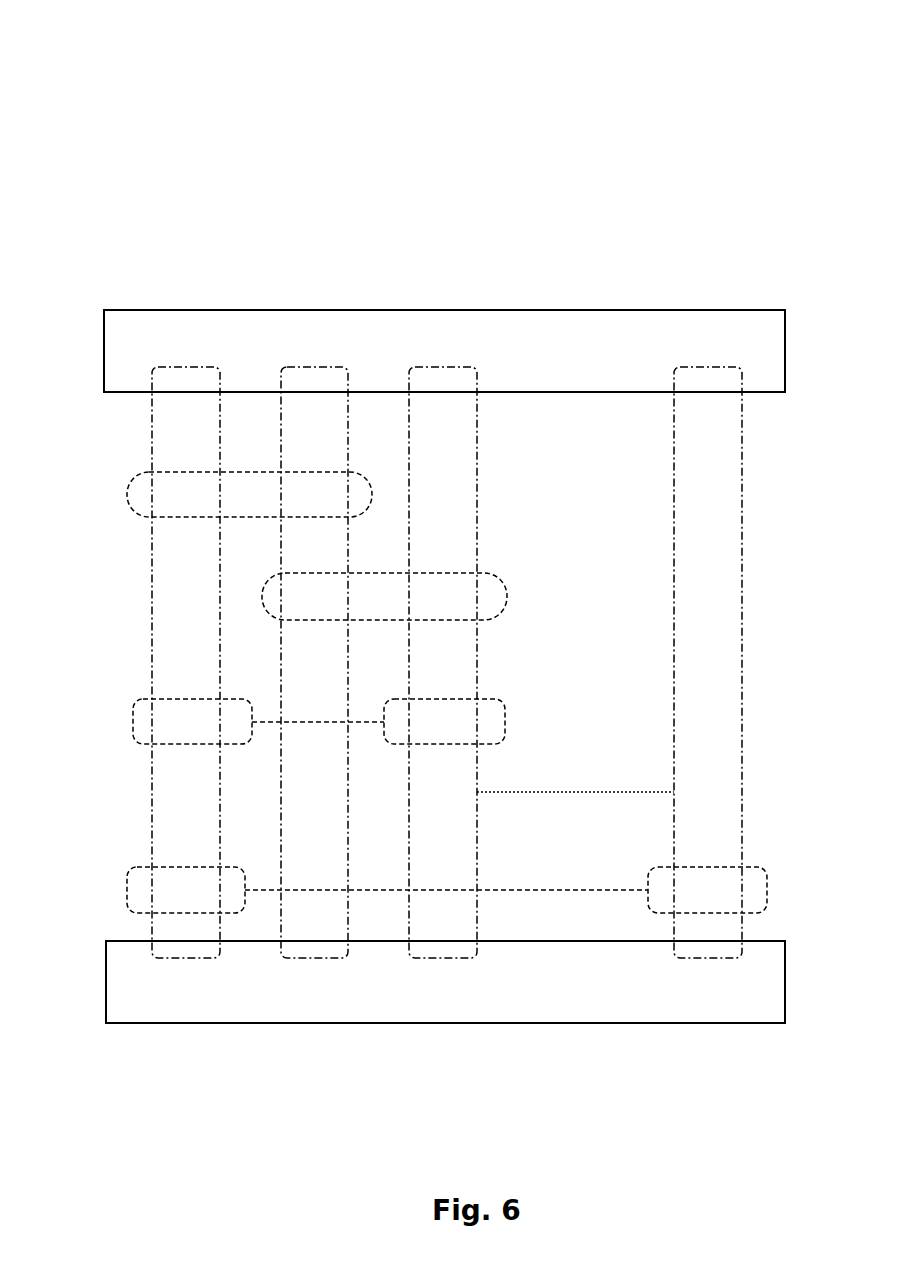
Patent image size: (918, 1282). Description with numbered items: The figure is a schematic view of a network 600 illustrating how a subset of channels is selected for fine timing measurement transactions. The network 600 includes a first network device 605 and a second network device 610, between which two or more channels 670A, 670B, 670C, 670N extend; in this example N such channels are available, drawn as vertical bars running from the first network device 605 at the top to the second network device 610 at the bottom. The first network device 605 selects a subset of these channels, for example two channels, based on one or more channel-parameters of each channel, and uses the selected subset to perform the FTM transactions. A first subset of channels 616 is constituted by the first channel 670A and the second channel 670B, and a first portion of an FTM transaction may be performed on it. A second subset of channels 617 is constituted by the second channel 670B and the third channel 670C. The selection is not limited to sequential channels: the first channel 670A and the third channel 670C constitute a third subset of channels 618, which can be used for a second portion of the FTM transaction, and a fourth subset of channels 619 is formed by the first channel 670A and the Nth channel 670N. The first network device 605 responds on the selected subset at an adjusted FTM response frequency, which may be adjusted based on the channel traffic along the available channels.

The network 600 is at (677, 80).
The first network device 605 is at (639, 310).
The second network device 610 is at (590, 1023).
The first subset of channels 616 is at (135, 470).
The second subset of channels 617 is at (503, 575).
The third subset of channels 618 is at (133, 700).
The fourth subset of channels 619 is at (128, 868).
The first channel 670A is at (150, 605).
The second channel 670B is at (275, 688).
The third channel 670C is at (408, 682).
The Nth channel 670N is at (676, 722).